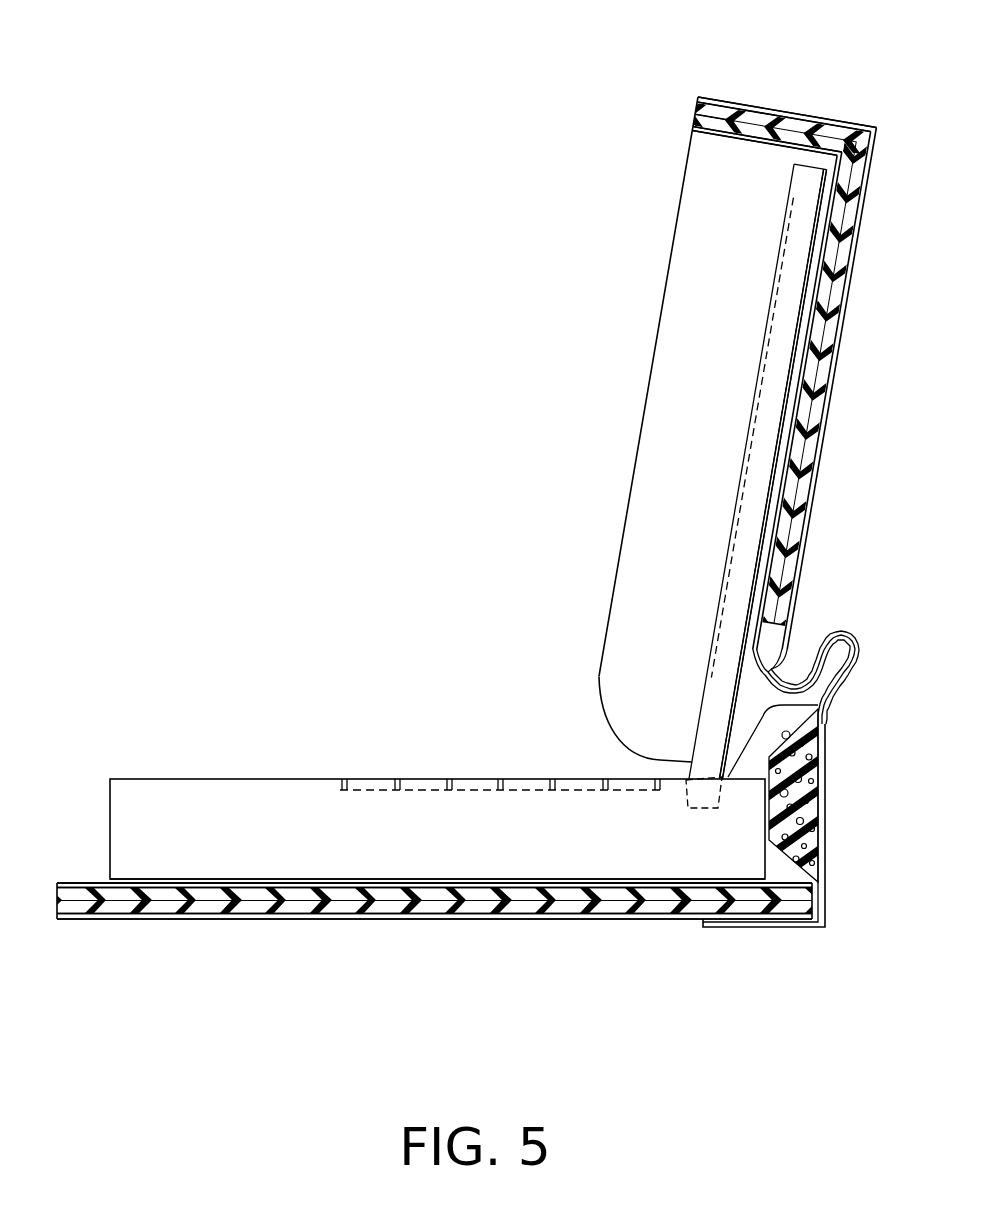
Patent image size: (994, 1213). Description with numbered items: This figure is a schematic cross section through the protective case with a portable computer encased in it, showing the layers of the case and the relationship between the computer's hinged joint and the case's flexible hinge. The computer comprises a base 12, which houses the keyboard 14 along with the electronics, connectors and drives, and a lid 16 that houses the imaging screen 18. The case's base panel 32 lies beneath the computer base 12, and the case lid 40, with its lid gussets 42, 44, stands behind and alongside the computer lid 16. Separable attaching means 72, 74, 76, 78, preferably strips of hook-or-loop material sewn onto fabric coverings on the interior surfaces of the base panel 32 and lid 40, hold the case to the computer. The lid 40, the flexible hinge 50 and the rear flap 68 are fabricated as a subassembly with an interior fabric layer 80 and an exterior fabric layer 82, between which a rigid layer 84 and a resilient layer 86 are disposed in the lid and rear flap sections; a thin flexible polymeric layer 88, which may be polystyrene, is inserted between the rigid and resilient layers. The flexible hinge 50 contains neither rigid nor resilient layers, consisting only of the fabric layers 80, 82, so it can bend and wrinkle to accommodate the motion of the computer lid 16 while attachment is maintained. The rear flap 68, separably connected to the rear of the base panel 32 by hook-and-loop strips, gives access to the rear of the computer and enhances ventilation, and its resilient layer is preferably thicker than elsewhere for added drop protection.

The base 12 is at (255, 778).
The keyboard 14 is at (490, 778).
The lid 16 is at (808, 187).
The imaging screen 18 is at (765, 347).
The base panel 32 is at (272, 926).
The lid 40 is at (843, 330).
The lid gusset 42 is at (665, 445).
The lid gusset 44 is at (792, 103).
The flexible hinge 50 is at (837, 633).
The rear flap 68 is at (828, 772).
The separable attaching means 72 is at (207, 882).
The separable attaching means 74 is at (648, 877).
The separable attaching means 76 is at (765, 548).
The separable attaching means 78 is at (820, 230).
The interior fabric layer 80 is at (733, 133).
The exterior fabric layer 82 is at (830, 118).
The rigid layer 84 is at (698, 98).
The resilient layer 86 is at (697, 125).
The flexible layer 88 is at (692, 107).